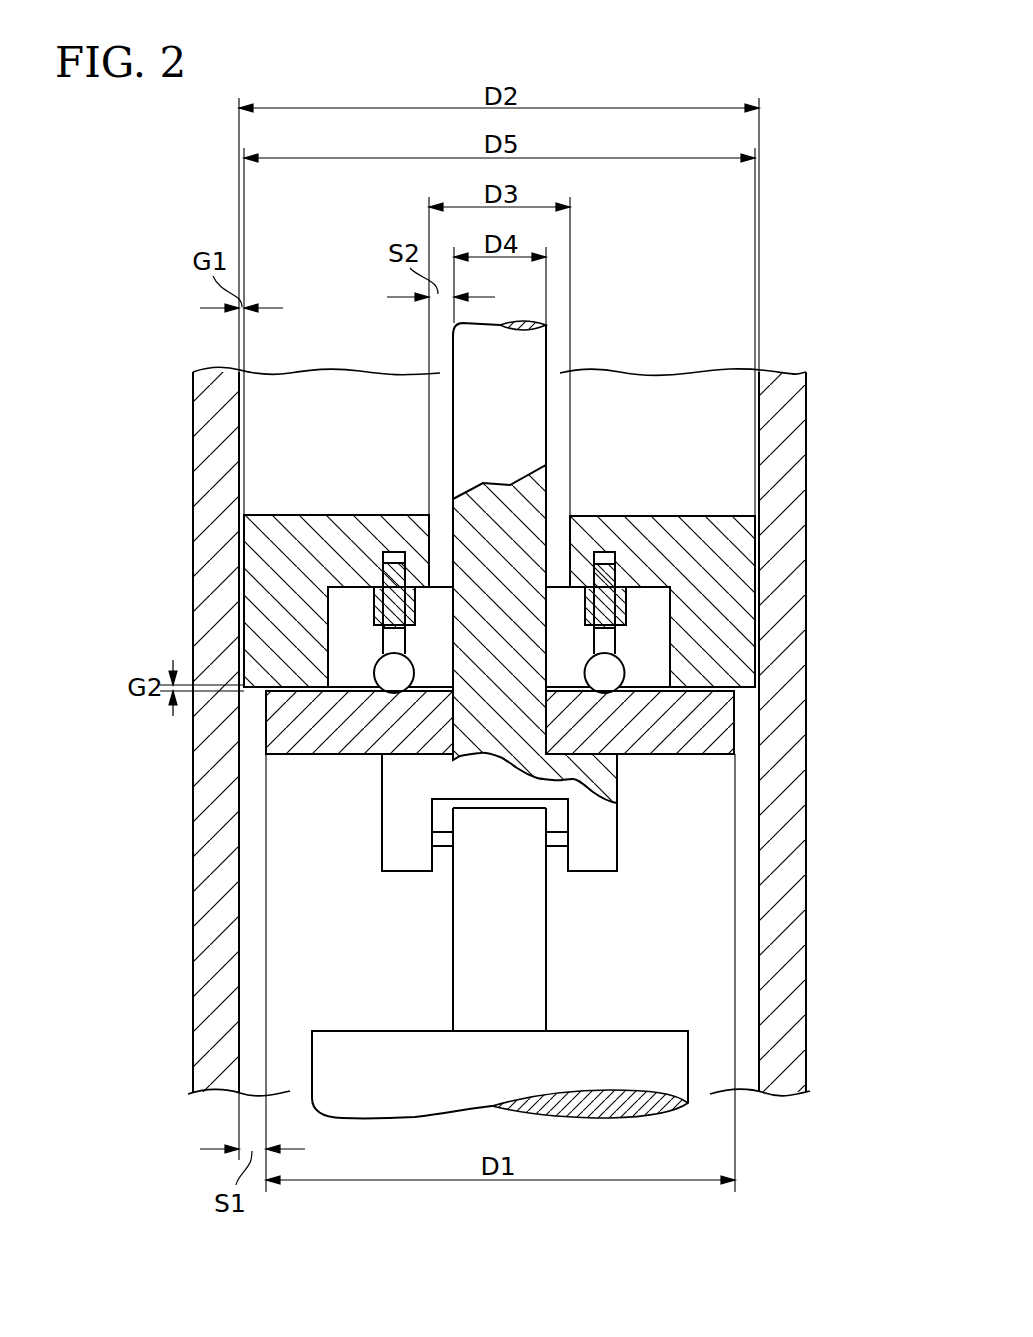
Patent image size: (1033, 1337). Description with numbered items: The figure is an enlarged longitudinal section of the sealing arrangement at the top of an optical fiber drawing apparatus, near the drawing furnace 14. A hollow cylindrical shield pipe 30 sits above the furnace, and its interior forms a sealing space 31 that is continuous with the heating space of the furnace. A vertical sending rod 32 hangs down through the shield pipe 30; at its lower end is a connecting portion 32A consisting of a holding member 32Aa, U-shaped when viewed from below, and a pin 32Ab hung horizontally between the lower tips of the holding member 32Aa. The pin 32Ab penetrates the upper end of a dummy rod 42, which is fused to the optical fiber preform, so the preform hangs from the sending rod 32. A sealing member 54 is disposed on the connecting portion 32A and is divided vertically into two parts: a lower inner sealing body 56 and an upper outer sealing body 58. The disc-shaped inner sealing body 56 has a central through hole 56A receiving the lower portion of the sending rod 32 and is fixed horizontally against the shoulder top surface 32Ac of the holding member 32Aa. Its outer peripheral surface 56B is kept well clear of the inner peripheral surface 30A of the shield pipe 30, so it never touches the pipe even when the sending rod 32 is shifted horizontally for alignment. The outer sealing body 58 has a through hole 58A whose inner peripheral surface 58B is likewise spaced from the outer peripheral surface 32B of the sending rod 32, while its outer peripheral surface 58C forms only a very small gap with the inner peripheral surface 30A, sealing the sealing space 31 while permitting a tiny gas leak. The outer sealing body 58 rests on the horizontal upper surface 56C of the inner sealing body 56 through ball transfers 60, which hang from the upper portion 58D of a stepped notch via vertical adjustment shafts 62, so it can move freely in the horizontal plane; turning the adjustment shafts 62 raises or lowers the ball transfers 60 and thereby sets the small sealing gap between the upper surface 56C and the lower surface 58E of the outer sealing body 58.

The drawing furnace 14 is at (415, 1098).
The shield pipe 30 is at (208, 1038).
The inner peripheral surface of the shield pipe 30A is at (205, 962).
The sealing space 31 is at (693, 943).
The sending rod 32 is at (478, 366).
The connecting portion 32A is at (598, 825).
The holding member 32Aa is at (596, 853).
The pin 32Ab is at (553, 840).
The shoulder top surface 32Ac is at (588, 753).
The outer peripheral surface of the sending rod 32B is at (452, 412).
The dummy rod 42 is at (528, 980).
The sealing member 54 is at (95, 638).
The inner sealing body 56 is at (266, 718).
The through hole 56A is at (453, 758).
The outer peripheral surface of the inner sealing body 56B is at (266, 737).
The upper surface of the inner sealing body 56C is at (348, 702).
The outer sealing body 58 is at (265, 620).
The through hole 58A is at (442, 520).
The inner peripheral surface of the through hole 58B is at (430, 527).
The outer peripheral surface of the outer sealing body 58C is at (244, 548).
The upper portion of the stepped notch portion 58D is at (583, 547).
The lower surface of the outer sealing body 58E is at (302, 692).
The ball transfer 60 is at (393, 688).
The adjustment shaft 62 is at (392, 584).